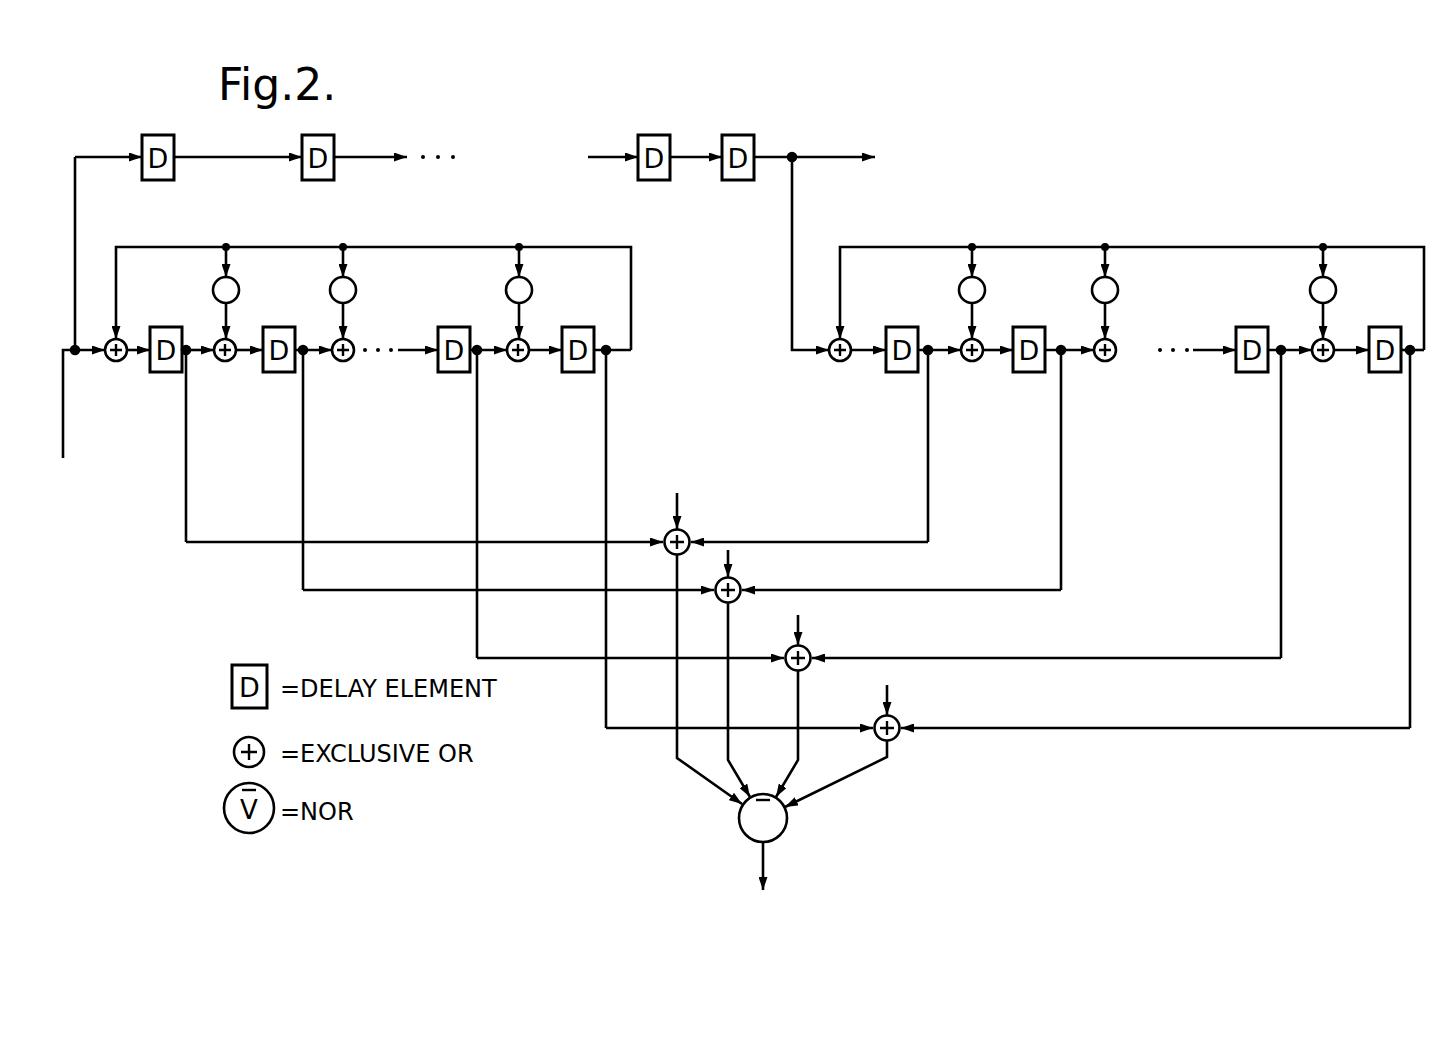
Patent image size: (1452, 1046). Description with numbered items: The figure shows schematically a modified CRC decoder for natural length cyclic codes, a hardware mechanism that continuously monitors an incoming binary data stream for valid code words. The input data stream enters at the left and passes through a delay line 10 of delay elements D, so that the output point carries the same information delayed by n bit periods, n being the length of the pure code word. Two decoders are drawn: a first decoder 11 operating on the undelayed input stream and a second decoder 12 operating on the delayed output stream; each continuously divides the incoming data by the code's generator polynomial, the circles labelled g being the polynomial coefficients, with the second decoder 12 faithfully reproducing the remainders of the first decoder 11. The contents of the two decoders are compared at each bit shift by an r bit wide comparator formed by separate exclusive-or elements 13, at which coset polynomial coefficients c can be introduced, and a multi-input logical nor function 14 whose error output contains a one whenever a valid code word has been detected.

The delay line 10 is at (691, 133).
The first decoder 11 is at (636, 273).
The second decoder 12 is at (1432, 261).
The exclusive-or elements 13 is at (668, 532).
The multi-input logical nor function 14 is at (787, 837).